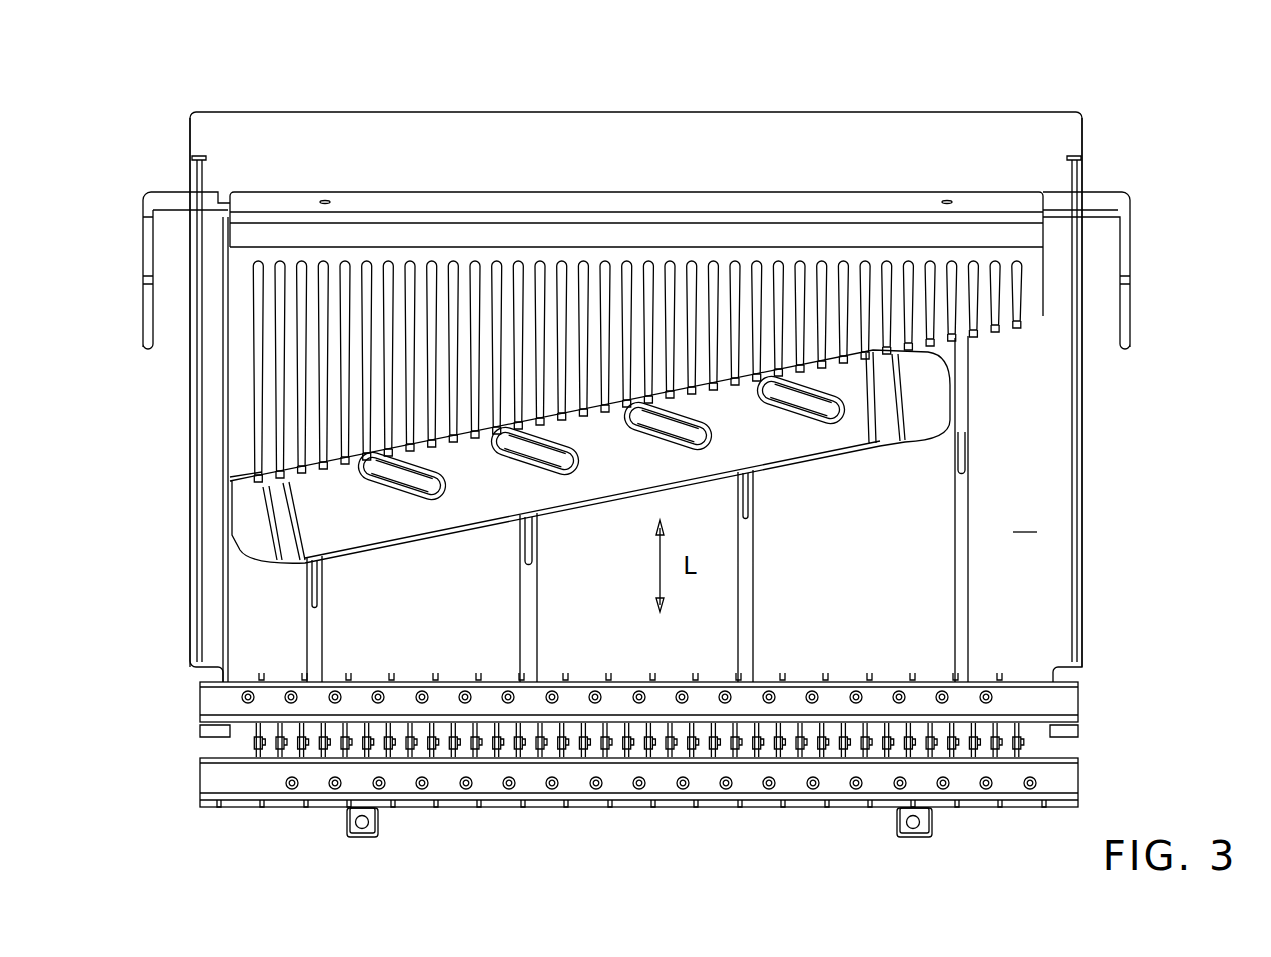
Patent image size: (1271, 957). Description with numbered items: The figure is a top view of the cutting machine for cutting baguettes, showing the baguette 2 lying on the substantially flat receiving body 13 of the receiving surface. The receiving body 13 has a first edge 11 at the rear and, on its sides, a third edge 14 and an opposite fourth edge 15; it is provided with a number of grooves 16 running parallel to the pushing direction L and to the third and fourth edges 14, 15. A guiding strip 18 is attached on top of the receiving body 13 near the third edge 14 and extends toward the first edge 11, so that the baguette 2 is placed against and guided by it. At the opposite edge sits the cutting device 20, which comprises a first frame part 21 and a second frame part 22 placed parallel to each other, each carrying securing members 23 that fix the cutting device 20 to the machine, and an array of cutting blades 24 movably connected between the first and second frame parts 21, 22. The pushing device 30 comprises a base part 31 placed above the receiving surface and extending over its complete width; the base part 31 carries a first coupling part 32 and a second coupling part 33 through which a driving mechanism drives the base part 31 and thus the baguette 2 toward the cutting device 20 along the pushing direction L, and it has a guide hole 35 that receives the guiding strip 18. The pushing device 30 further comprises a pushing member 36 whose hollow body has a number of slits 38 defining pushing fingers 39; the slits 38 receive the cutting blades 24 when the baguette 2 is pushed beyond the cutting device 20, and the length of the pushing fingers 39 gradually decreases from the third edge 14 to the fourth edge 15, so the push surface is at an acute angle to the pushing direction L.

The baguette 2 is at (444, 515).
The first edge 11 is at (963, 112).
The receiving body 13 is at (1025, 519).
The third edge 14 is at (190, 568).
The fourth edge 15 is at (1082, 495).
The grooves 16 is at (527, 627).
The guiding strip 18 is at (221, 232).
The cutting device 20 is at (1058, 702).
The first frame part 21 is at (198, 697).
The second frame part 22 is at (200, 772).
The securing members 23 is at (345, 830).
The cutting blades 24 is at (302, 758).
The pushing device 30 is at (1010, 202).
The base part 31 is at (388, 200).
The first coupling part 32 is at (1130, 270).
The second coupling part 33 is at (146, 262).
The guide hole 35 is at (230, 192).
The pushing member 36 is at (443, 250).
The slits 38 is at (538, 262).
The pushing fingers 39 is at (617, 262).